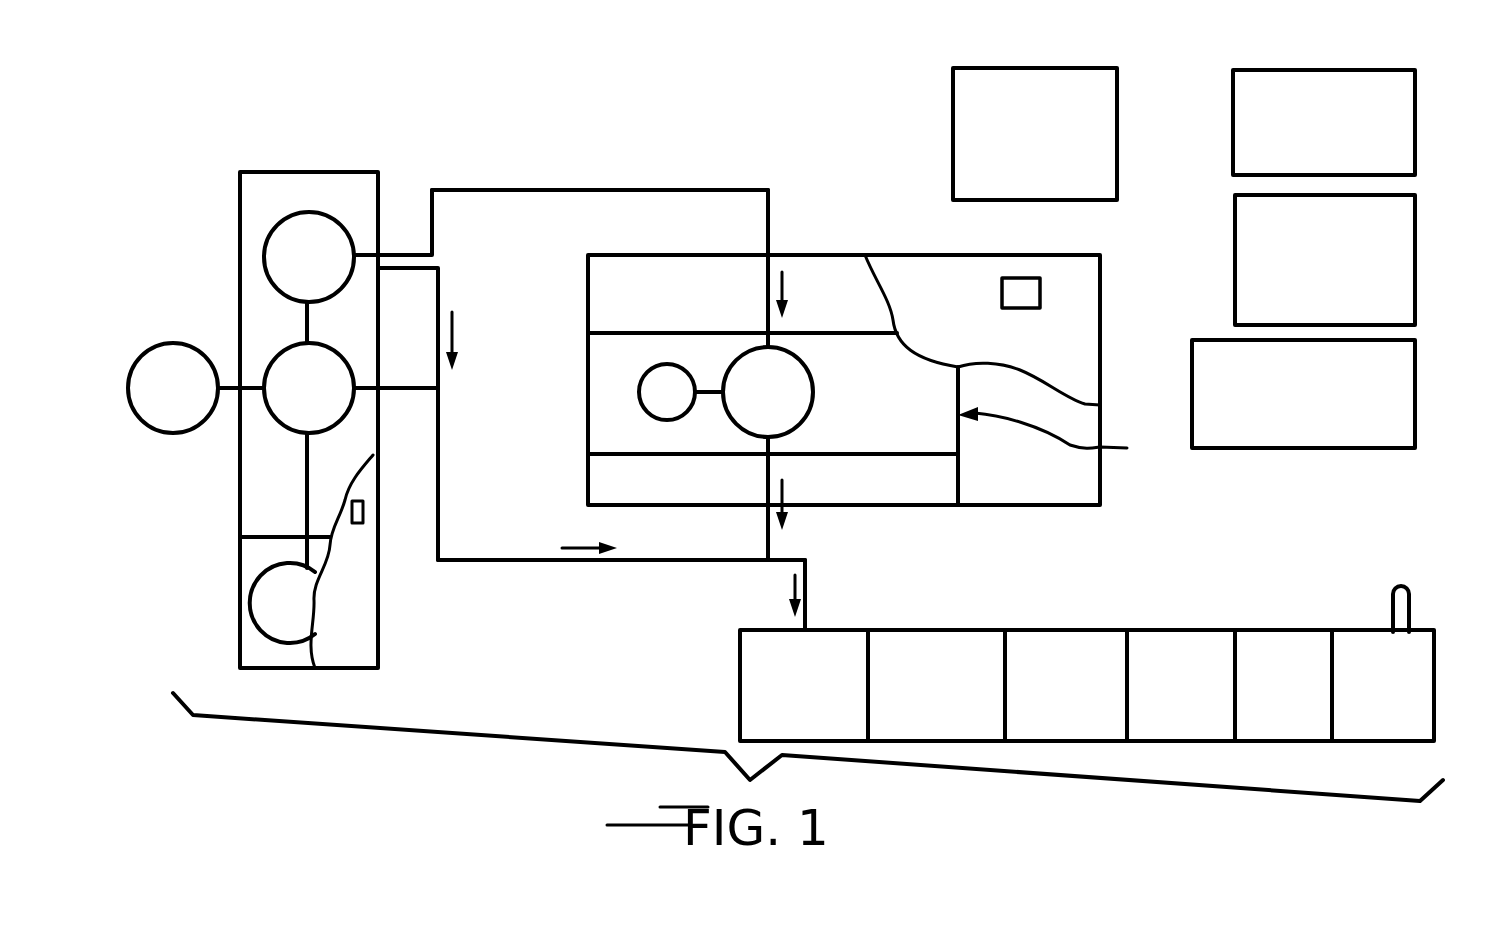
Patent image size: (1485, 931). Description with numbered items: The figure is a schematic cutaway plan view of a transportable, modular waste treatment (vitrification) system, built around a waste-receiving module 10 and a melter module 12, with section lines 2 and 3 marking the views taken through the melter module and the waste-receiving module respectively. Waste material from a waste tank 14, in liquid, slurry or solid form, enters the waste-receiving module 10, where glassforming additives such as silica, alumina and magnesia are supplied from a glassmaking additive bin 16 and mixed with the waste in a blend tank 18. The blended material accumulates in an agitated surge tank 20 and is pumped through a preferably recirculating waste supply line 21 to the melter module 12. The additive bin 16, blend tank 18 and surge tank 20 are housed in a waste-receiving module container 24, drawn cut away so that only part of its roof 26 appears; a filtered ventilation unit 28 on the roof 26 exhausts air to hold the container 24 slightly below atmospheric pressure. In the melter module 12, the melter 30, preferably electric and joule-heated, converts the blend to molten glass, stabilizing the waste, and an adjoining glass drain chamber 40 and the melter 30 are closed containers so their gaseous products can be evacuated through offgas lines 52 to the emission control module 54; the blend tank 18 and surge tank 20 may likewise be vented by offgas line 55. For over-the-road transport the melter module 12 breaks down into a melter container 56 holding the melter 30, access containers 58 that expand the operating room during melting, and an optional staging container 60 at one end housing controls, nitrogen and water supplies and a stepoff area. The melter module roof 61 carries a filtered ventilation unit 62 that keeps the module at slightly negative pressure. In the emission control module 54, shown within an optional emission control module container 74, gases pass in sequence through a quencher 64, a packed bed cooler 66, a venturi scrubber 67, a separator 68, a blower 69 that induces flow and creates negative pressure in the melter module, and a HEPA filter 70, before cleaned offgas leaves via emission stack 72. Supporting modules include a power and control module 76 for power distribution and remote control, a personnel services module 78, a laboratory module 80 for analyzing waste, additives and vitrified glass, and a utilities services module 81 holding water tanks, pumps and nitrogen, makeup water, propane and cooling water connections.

The waste-receiving module 10 is at (218, 628).
The melter module 12 is at (845, 240).
The waste tank 14 is at (176, 436).
The glassmaking additive bin 16 is at (300, 647).
The blend tank 18 is at (275, 353).
The surge tank 20 is at (323, 211).
The waste supply line 21 is at (703, 188).
The waste-receiving module container 24 is at (230, 201).
The container roof 26 is at (357, 588).
The ventilation unit 28 is at (352, 514).
The melter 30 is at (812, 387).
The glass drain chamber 40 is at (663, 362).
The offgas lines 52 is at (768, 543).
The emission control module 54 is at (1192, 770).
The offgas line 55 is at (587, 563).
The melter container 56 is at (1069, 441).
The access containers 58 is at (575, 291).
The staging container 60 is at (1115, 478).
The melter module roof 61 is at (1100, 278).
The filtered ventilation unit 62 is at (1027, 278).
The quencher 64 is at (740, 682).
The packed bed cooler 66 is at (933, 628).
The venturi scrubber 67 is at (1068, 629).
The separator 68 is at (1200, 629).
The blower 69 is at (1292, 629).
The HEPA filter 70 is at (1357, 630).
The emission stack 72 is at (1410, 598).
The emission control module container 74 is at (1142, 612).
The power and control module 76 is at (1117, 112).
The personnel services module 78 is at (1415, 400).
The laboratory module 80 is at (1415, 95).
The utilities services module 81 is at (1415, 283).
The section line 2 is at (562, 387).
The section line 3 is at (413, 210).